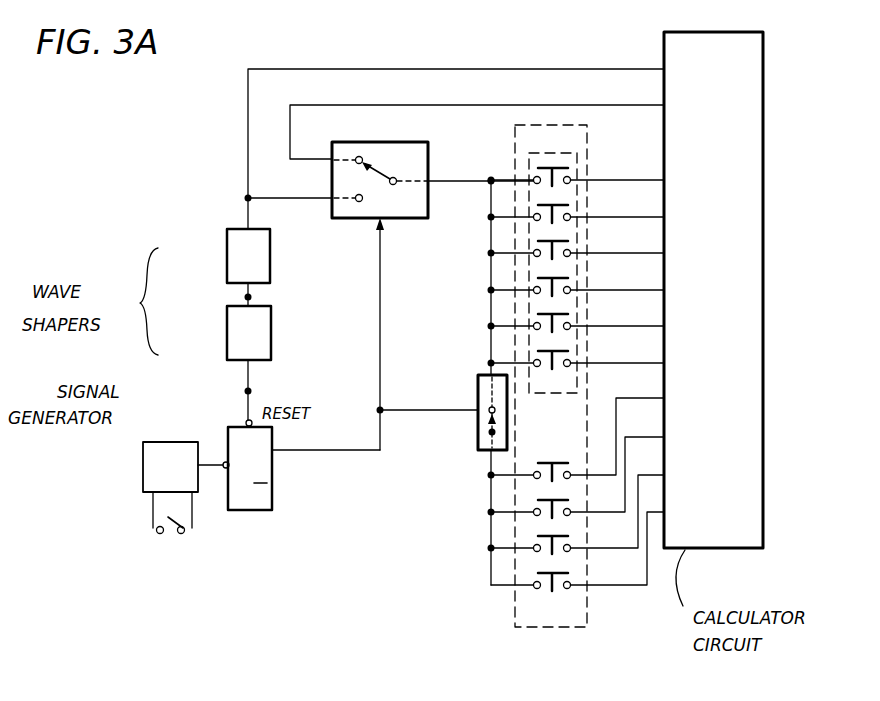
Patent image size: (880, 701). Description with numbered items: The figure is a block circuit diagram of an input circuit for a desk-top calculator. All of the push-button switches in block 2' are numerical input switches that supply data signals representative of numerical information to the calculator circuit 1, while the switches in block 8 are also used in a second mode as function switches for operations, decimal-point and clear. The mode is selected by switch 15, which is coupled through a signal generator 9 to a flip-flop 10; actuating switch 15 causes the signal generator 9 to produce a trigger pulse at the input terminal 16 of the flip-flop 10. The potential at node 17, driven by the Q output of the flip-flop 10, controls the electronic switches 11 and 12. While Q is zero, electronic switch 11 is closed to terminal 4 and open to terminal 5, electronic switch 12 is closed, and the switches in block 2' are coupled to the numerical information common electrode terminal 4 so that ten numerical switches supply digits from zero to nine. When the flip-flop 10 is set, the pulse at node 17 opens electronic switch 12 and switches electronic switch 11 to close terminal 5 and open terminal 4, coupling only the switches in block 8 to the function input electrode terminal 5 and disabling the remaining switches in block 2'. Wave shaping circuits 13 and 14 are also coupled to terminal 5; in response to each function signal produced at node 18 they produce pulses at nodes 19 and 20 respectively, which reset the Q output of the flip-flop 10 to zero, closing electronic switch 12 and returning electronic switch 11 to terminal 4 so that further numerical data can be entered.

The calculator circuit 1 is at (749, 534).
The block of numerical input switches 2' is at (573, 390).
The numerical information common electrode terminal 4 is at (485, 126).
The function input electrode terminal 5 is at (462, 130).
The block of function switches 8 is at (534, 395).
The signal generator 9 is at (168, 449).
The flip-flop 10 is at (257, 509).
The electronic switch 11 is at (430, 149).
The electronic switch 12 is at (478, 381).
The wave shaping circuit 13 is at (228, 260).
The wave shaping circuit 14 is at (228, 338).
The switch 15 is at (172, 531).
The input terminal of flip-flop 16 is at (226, 469).
The node 17 is at (380, 401).
The node 18 is at (490, 183).
The node 19 is at (252, 296).
The node 20 is at (251, 390).